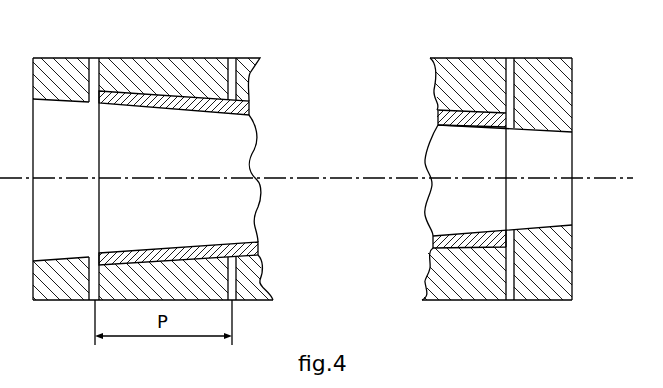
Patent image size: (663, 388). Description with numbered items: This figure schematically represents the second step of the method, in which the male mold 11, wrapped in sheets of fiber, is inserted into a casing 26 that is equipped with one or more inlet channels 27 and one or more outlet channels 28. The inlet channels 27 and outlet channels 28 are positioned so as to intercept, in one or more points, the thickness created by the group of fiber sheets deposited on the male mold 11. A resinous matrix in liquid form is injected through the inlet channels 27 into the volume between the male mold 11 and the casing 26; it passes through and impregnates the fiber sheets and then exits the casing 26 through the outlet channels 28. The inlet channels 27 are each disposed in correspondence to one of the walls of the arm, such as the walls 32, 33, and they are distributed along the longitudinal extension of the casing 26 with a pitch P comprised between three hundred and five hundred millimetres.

The male mold 11 is at (455, 152).
The casing 26 is at (465, 77).
The inlet channels 27 is at (94, 67).
The outlet channels 28 is at (505, 70).
The wall of the arm 32 is at (240, 106).
The wall of the arm 33 is at (246, 249).